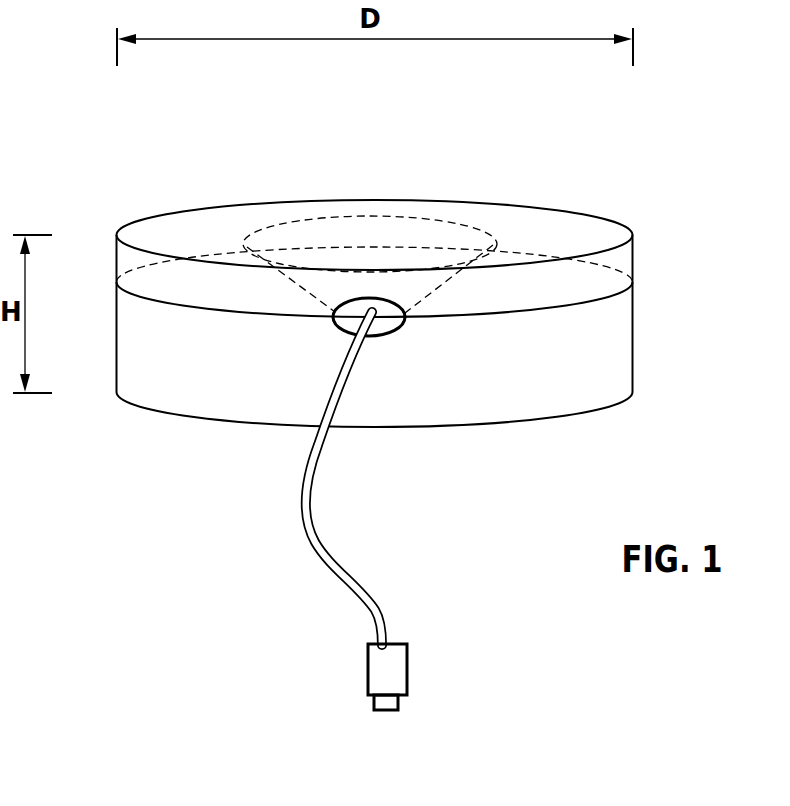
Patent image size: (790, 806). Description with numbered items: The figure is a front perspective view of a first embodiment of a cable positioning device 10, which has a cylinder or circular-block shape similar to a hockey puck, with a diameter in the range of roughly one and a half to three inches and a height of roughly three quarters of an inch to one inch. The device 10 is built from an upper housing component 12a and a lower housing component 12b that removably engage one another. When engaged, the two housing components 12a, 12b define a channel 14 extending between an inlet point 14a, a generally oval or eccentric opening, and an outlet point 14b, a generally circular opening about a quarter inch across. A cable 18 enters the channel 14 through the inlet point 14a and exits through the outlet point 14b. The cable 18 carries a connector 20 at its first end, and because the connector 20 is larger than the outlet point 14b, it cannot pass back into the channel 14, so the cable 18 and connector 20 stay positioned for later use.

The cable positioning device 10 is at (415, 307).
The upper housing component 12a is at (535, 217).
The lower housing component 12b is at (618, 342).
The channel 14 is at (370, 323).
The inlet point 14a is at (377, 216).
The outlet point 14b is at (343, 303).
The cable 18 is at (300, 491).
The connector 20 is at (398, 673).